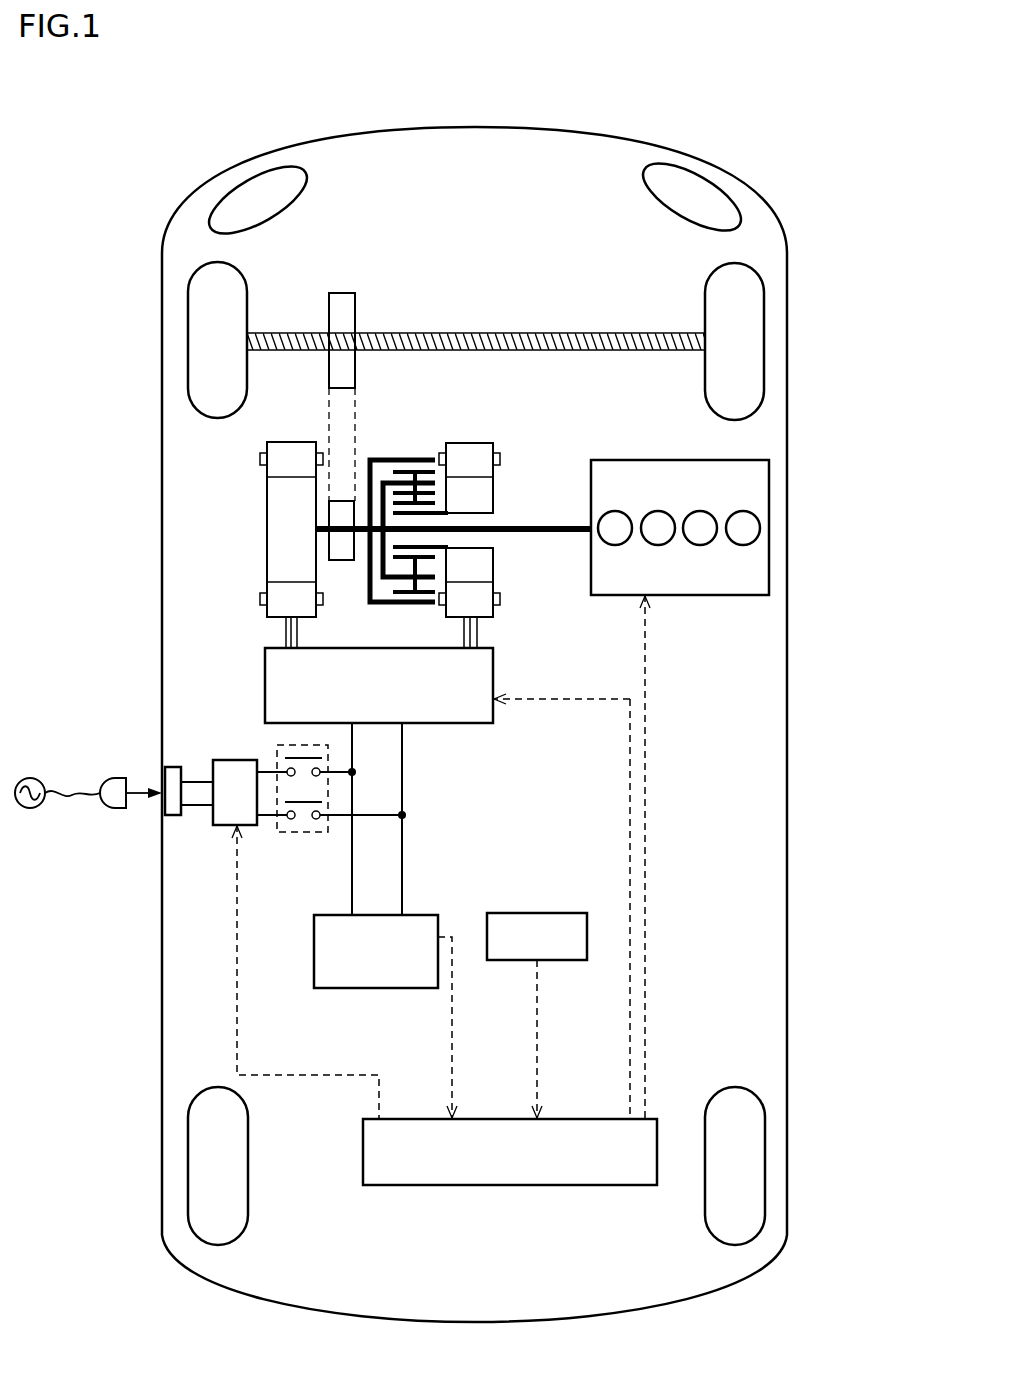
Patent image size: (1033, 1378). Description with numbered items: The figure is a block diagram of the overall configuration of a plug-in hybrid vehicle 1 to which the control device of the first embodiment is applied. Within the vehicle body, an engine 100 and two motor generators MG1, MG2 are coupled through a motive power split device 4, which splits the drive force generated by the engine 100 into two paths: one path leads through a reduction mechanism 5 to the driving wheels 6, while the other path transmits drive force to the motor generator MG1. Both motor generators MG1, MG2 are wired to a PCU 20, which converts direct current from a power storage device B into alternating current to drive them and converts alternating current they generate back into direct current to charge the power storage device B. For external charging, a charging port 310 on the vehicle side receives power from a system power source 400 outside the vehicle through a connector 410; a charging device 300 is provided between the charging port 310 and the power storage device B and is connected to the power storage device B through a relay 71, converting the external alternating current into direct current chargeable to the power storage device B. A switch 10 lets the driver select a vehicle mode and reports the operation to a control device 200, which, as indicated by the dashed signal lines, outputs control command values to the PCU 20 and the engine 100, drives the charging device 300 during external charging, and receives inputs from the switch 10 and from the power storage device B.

The hybrid vehicle 1 is at (148, 85).
The motive power split device 4 is at (402, 460).
The reduction mechanism 5 is at (340, 290).
The driving wheels 6 is at (764, 348).
The motor generator MG1 is at (468, 443).
The motor generator MG2 is at (292, 442).
The engine 100 is at (769, 575).
The PCU (Power Control Unit) 20 is at (493, 660).
The relay 71 is at (303, 835).
The charging device 300 is at (243, 760).
The charging port 310 is at (173, 767).
The connector 410 is at (117, 778).
The system power source 400 is at (30, 778).
The power storage device B is at (314, 938).
The switch 10 is at (537, 913).
The control device 200 is at (363, 1150).